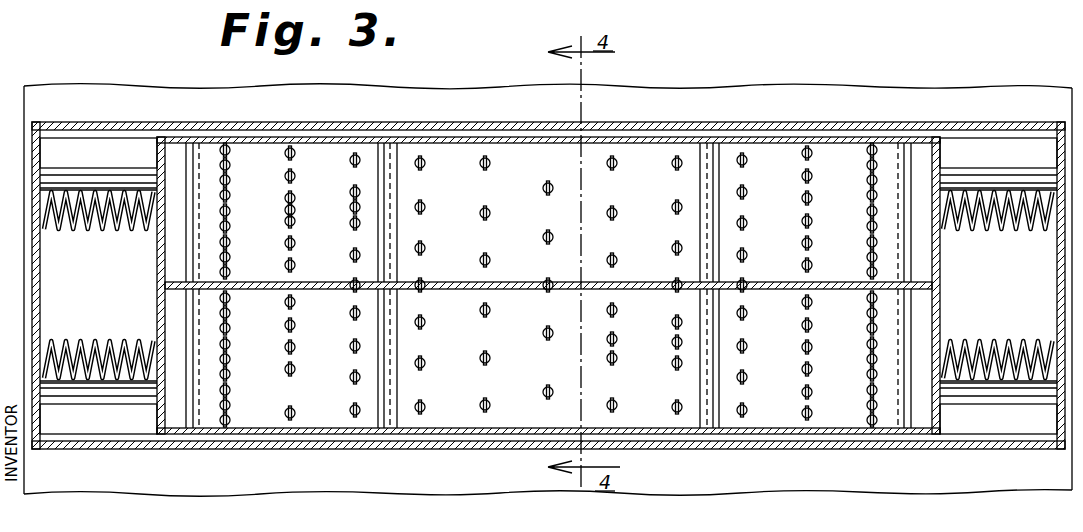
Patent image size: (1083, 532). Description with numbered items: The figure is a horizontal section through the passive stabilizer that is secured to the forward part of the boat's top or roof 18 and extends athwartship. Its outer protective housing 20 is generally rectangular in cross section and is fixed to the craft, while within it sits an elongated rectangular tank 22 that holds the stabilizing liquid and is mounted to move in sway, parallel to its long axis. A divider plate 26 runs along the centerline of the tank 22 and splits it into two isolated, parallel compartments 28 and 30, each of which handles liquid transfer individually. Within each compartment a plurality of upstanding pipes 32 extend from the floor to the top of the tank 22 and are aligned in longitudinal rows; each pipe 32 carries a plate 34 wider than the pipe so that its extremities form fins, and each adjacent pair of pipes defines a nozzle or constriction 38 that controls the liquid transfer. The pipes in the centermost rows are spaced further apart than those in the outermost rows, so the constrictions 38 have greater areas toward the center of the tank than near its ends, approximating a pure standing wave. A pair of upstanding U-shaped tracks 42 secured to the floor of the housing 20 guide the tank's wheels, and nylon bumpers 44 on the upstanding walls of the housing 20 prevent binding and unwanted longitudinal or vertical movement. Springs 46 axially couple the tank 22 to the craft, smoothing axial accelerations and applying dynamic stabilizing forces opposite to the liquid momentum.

The top or roof 18 is at (445, 93).
The outer protective housing 20 is at (704, 122).
The tank 22 is at (822, 137).
The divider plate 26 is at (512, 282).
The compartment 28 is at (523, 158).
The compartment 30 is at (512, 412).
The pipes or tubes 32 is at (671, 247).
The plate 34 is at (480, 400).
The nozzle or constriction 38 is at (352, 207).
The U-shaped tracks 42 is at (107, 167).
The nylon bumpers 44 is at (125, 133).
The springs 46 is at (125, 228).